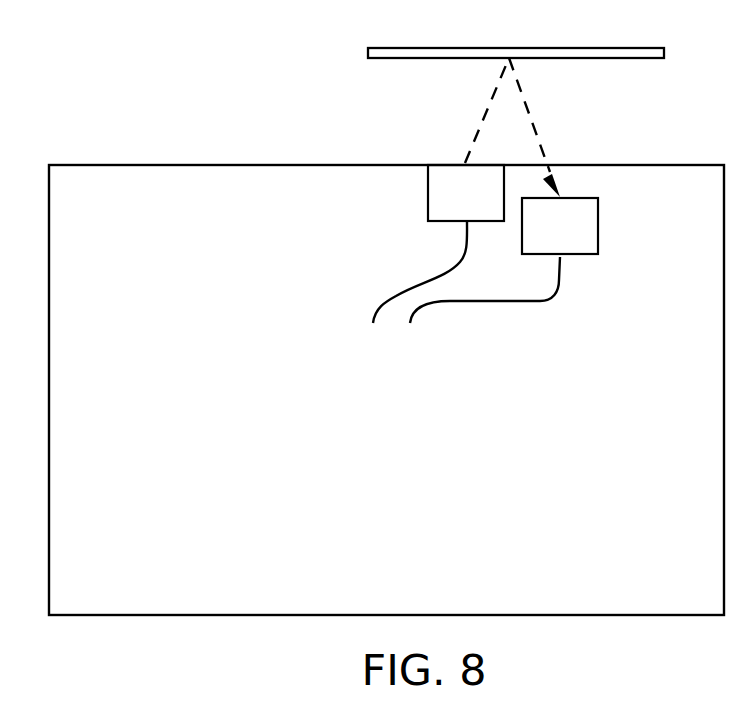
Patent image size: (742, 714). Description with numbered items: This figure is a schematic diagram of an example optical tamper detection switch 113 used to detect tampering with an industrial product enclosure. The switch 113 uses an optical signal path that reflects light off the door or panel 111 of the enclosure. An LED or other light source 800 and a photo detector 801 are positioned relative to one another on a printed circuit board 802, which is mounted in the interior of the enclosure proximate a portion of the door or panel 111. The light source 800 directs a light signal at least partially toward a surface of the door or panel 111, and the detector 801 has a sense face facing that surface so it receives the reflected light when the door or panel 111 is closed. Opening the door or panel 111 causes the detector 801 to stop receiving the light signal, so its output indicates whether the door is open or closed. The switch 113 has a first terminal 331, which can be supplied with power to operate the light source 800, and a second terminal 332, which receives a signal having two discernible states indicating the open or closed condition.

The optical tamper detection switch 113 is at (97, 84).
The door or panel 111 is at (402, 47).
The light source 800 is at (428, 203).
The photo detector 801 is at (598, 240).
The printed circuit board 802 is at (400, 402).
The first terminal 331 is at (386, 304).
The second terminal 332 is at (508, 303).